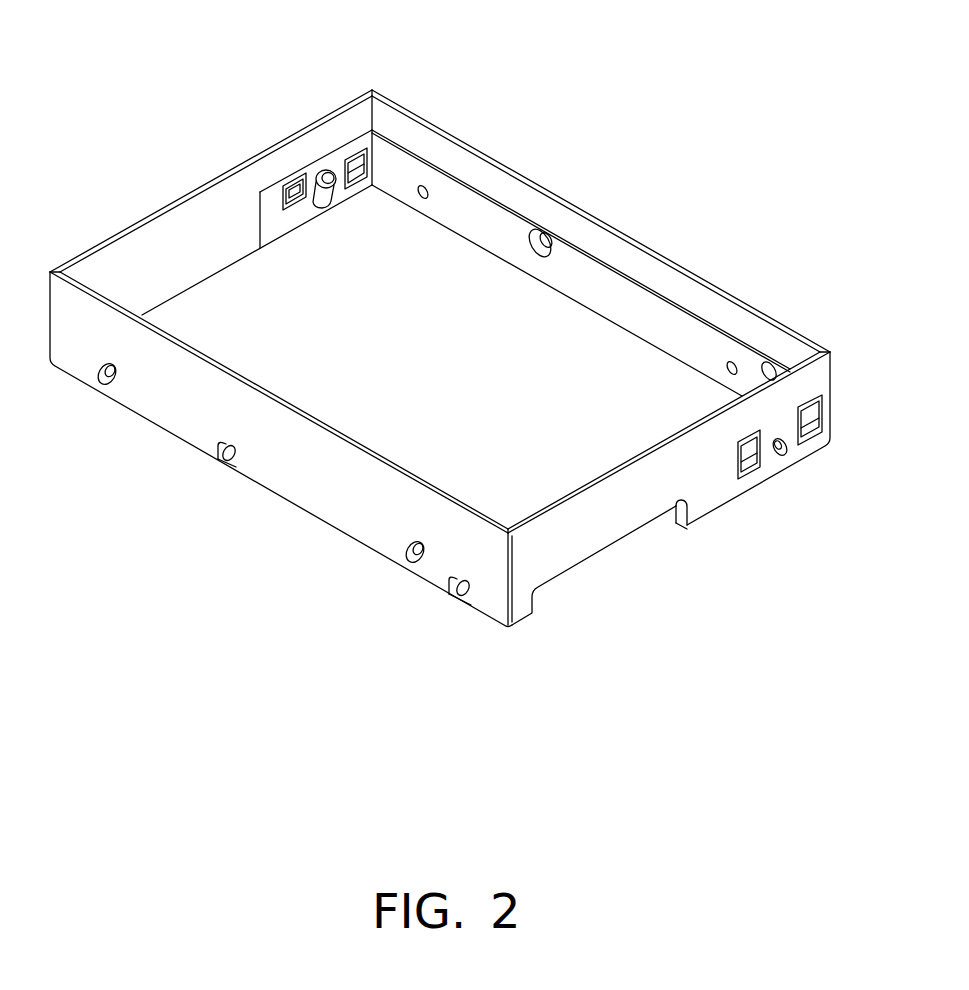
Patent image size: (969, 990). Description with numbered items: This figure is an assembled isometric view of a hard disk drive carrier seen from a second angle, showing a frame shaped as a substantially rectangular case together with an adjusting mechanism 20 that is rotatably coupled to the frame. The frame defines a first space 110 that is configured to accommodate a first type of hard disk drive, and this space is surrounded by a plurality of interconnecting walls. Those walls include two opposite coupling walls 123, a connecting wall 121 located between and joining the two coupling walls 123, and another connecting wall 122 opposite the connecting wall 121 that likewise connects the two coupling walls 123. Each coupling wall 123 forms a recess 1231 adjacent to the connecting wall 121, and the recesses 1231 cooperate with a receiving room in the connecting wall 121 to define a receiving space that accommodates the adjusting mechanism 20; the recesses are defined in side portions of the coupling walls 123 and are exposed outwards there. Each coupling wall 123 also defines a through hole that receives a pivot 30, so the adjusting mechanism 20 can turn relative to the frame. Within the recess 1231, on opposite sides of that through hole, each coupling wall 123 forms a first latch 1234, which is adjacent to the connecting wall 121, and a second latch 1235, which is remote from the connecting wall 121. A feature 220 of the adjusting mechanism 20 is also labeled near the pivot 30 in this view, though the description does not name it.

The adjusting mechanism 20 is at (577, 272).
The pivot 30 is at (322, 162).
The first space 110 is at (240, 338).
The connecting wall 121 is at (482, 167).
The connecting wall 122 is at (355, 510).
The coupling wall 123 is at (155, 236).
The hole of rail 220 is at (334, 166).
The recess 1231 is at (307, 173).
The first latch 1234 is at (363, 162).
The second latch 1235 is at (287, 182).